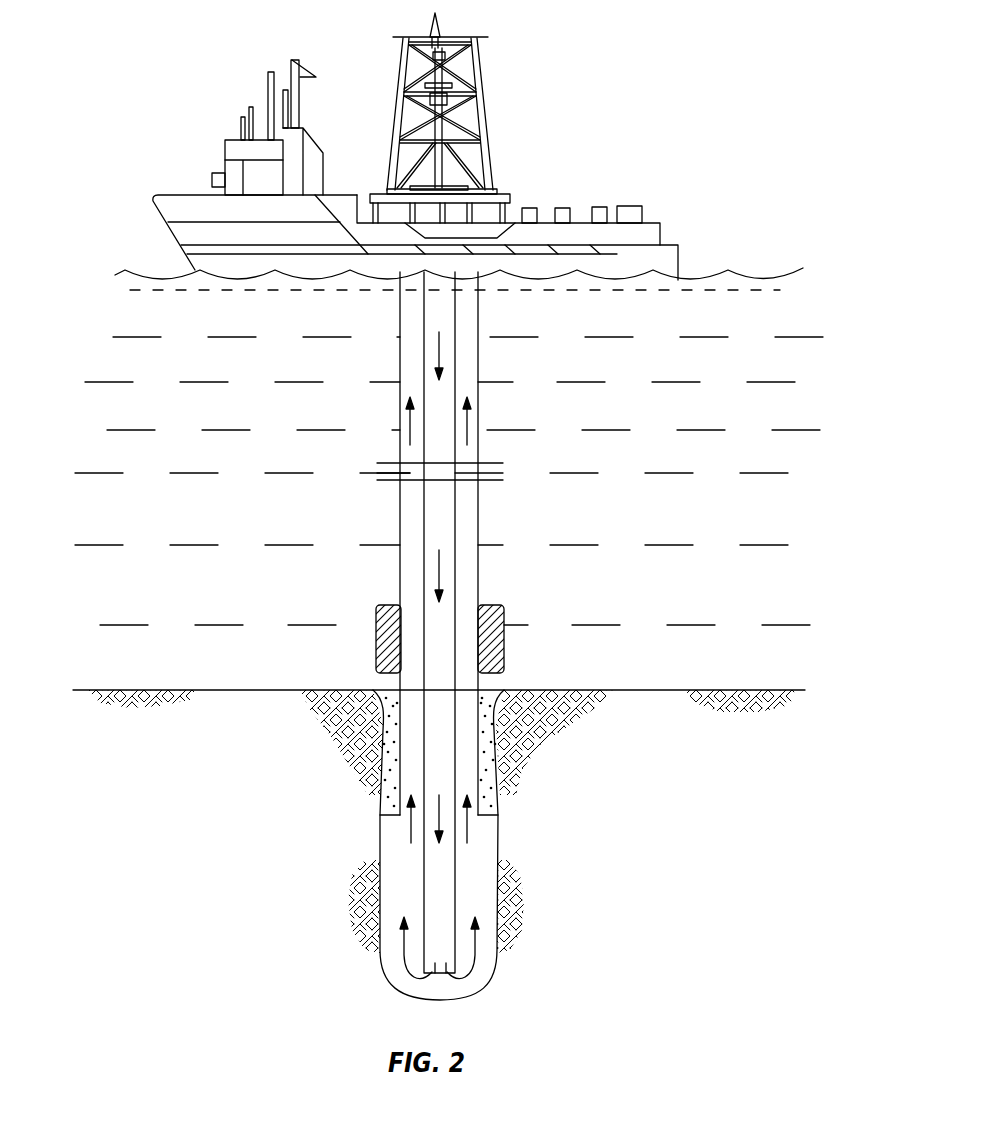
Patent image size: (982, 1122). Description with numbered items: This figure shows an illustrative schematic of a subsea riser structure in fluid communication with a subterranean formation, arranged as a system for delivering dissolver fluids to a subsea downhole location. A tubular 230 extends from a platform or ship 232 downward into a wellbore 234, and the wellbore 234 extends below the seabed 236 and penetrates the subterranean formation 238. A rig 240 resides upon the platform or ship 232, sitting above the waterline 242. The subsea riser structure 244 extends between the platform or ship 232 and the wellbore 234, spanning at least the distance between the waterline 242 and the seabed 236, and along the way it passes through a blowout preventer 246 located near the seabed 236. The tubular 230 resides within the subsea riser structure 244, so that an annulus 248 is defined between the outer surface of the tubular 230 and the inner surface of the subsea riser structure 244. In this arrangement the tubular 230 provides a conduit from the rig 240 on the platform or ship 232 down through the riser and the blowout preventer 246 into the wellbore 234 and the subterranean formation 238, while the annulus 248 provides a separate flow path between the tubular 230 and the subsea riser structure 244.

The tubular 230 is at (457, 535).
The platform or ship 232 is at (167, 195).
The wellbore 234 is at (480, 862).
The seabed 236 is at (88, 690).
The subterranean formation 238 is at (664, 778).
The rig 240 is at (487, 97).
The waterline 242 is at (143, 291).
The subsea riser structure 244 is at (479, 352).
The blowout preventer 246 is at (498, 620).
The annulus 248 is at (473, 397).